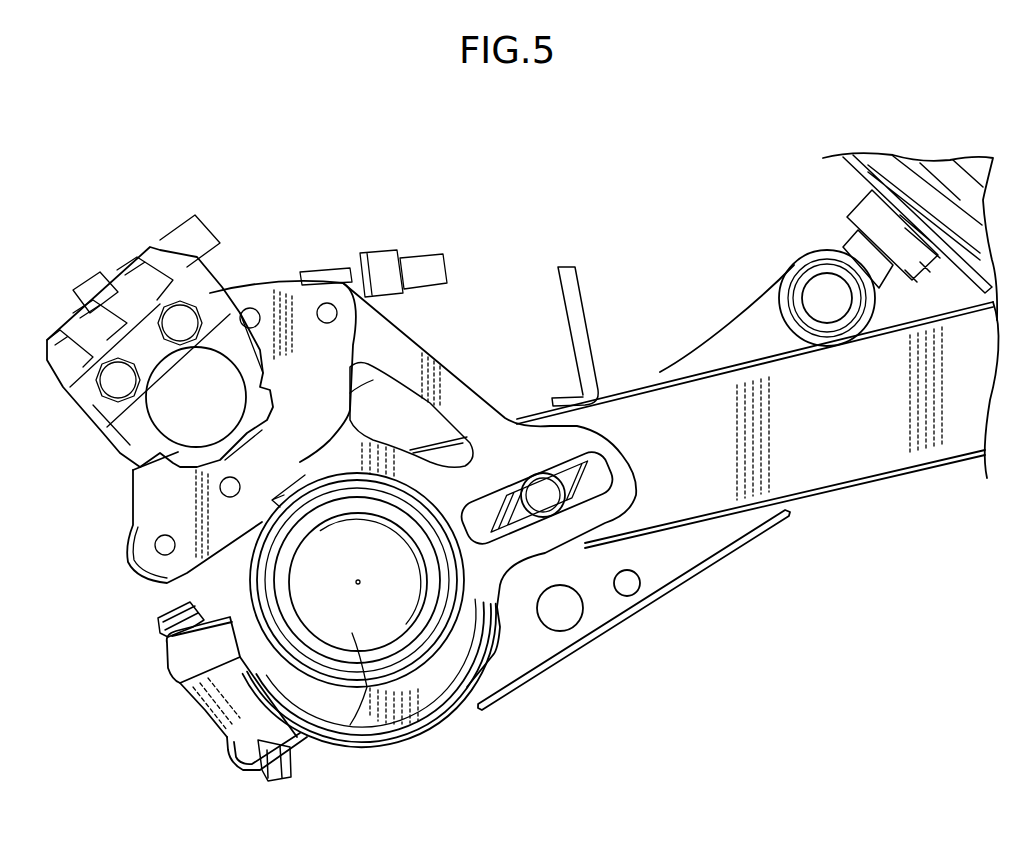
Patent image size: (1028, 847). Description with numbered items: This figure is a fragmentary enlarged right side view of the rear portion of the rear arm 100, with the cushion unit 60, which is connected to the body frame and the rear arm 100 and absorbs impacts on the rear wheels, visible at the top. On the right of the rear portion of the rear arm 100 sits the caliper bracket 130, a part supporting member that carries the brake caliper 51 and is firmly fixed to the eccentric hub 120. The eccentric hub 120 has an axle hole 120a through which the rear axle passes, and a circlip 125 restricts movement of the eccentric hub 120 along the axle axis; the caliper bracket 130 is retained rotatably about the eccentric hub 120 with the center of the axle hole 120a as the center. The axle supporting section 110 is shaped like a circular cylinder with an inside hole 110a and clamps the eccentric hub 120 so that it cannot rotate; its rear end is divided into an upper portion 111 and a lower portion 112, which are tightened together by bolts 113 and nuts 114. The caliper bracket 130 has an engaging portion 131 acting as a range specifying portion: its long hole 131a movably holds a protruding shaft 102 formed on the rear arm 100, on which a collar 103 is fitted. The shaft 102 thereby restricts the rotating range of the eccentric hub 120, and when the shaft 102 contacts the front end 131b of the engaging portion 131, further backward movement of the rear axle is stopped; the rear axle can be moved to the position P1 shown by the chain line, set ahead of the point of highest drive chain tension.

The brake caliper 51 is at (147, 243).
The cushion unit 60 is at (878, 141).
The rear arm 100 is at (637, 416).
The protruding shaft 102 is at (573, 493).
The collar 103 is at (547, 508).
The axle supporting section 110 is at (88, 688).
The inside hole 110a is at (405, 743).
The upper portion 111 is at (180, 658).
The lower portion 112 is at (227, 740).
The bolts 113 is at (173, 618).
The nuts 114 is at (277, 782).
The eccentric hub 120 is at (428, 715).
The axle hole 120a is at (352, 633).
The circlip 125 is at (433, 648).
The caliper bracket 130 is at (415, 350).
The engaging portion 131 is at (631, 527).
The long hole 131a is at (598, 489).
The front end 131b is at (630, 463).
The position P1 is at (267, 578).